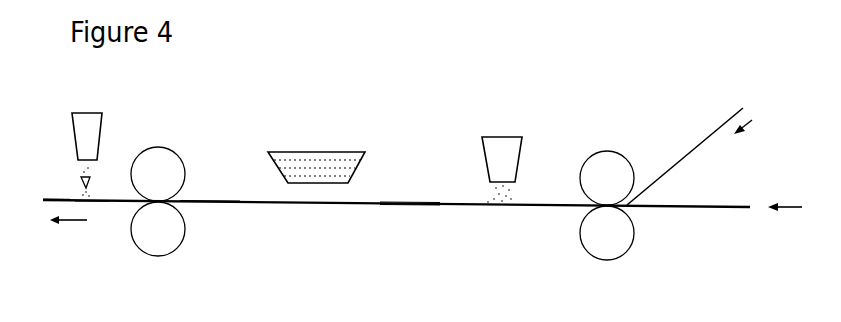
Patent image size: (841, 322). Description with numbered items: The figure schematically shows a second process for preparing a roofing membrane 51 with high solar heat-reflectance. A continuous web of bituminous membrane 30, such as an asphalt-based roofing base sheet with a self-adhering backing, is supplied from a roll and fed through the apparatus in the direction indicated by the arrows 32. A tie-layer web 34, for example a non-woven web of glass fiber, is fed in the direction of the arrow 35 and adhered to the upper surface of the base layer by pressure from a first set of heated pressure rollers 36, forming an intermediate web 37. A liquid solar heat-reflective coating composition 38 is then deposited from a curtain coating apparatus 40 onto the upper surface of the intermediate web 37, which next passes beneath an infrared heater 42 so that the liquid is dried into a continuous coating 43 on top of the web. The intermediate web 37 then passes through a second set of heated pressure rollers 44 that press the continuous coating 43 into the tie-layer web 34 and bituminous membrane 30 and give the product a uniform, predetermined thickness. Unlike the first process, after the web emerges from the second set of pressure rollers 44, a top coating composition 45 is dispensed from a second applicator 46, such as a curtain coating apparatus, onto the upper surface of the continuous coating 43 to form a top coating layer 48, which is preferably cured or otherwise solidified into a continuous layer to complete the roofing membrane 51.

The web of bituminous membrane 30 is at (667, 207).
The arrows 32 is at (72, 223).
The tie-layer web 34 is at (685, 150).
The arrow 35 is at (755, 130).
The first set of heated pressure rollers 36 is at (603, 177).
The intermediate web 37 is at (412, 205).
The liquid solar heat-reflective coating composition 38 is at (410, 200).
The curtain coating apparatus 40 is at (505, 155).
The infrared heater 42 is at (322, 153).
The continuous coating 43 is at (208, 200).
The second set of heated pressure rollers 44 is at (163, 173).
The top coating composition 45 is at (88, 182).
The second applicator 46 is at (90, 138).
The top coating layer 48 is at (63, 200).
The roofing membrane 51 is at (85, 200).